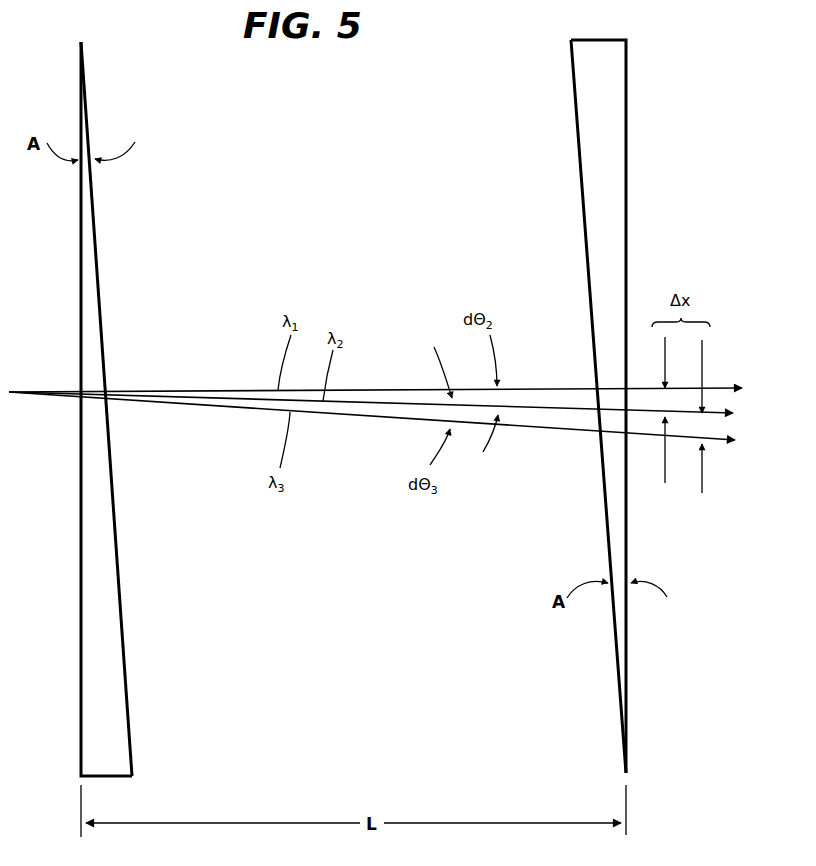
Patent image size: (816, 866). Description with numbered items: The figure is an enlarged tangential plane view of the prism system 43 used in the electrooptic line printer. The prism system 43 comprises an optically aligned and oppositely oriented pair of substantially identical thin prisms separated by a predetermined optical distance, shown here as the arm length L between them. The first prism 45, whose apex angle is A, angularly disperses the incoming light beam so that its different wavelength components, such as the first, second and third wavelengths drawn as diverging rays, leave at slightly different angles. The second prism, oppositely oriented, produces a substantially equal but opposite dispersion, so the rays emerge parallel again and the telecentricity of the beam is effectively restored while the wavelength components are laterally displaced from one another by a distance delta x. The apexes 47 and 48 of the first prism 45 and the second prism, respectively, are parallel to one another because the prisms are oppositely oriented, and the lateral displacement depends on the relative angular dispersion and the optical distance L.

The prism system 43 is at (532, 96).
The first prism 45 is at (91, 600).
The apex of the first prism 47 is at (83, 42).
The apex of the second prism 48 is at (625, 765).